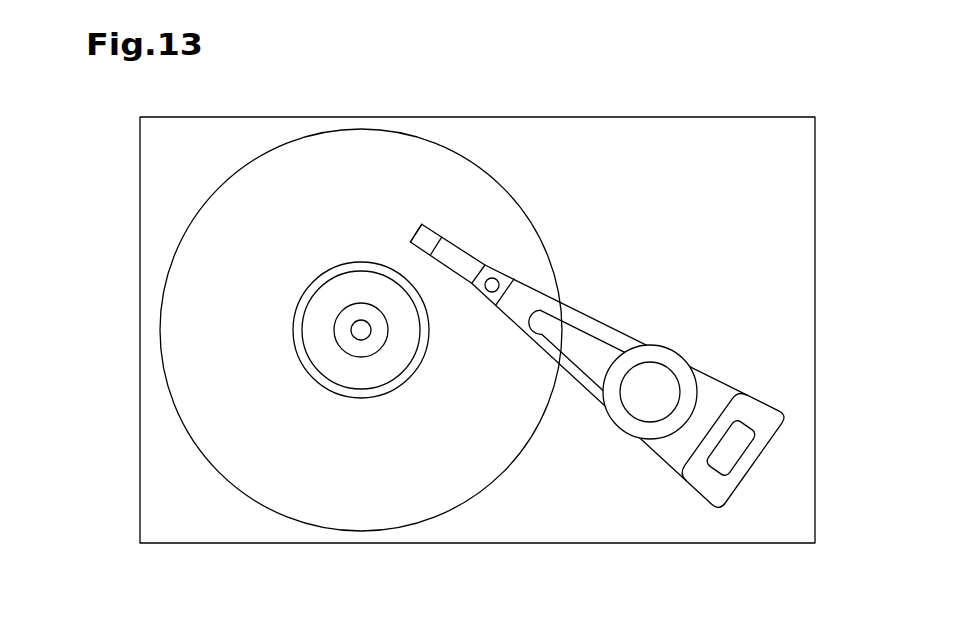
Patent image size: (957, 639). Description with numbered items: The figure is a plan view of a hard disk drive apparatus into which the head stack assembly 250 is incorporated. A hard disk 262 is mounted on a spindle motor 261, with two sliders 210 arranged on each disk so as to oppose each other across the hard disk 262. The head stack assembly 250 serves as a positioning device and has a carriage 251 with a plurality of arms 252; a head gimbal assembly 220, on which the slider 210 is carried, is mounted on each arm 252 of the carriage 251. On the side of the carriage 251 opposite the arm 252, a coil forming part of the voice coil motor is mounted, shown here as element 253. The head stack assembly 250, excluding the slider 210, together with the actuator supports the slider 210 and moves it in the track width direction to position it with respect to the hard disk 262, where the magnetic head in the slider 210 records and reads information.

The slider 210 is at (434, 226).
The head gimbal assembly 220 is at (467, 282).
The head stack assembly 250 is at (655, 452).
The carriage 251 is at (663, 343).
The arm 252 is at (587, 387).
The voice coil 253 is at (755, 463).
The spindle motor 261 is at (362, 342).
The hard disk 262 is at (285, 517).